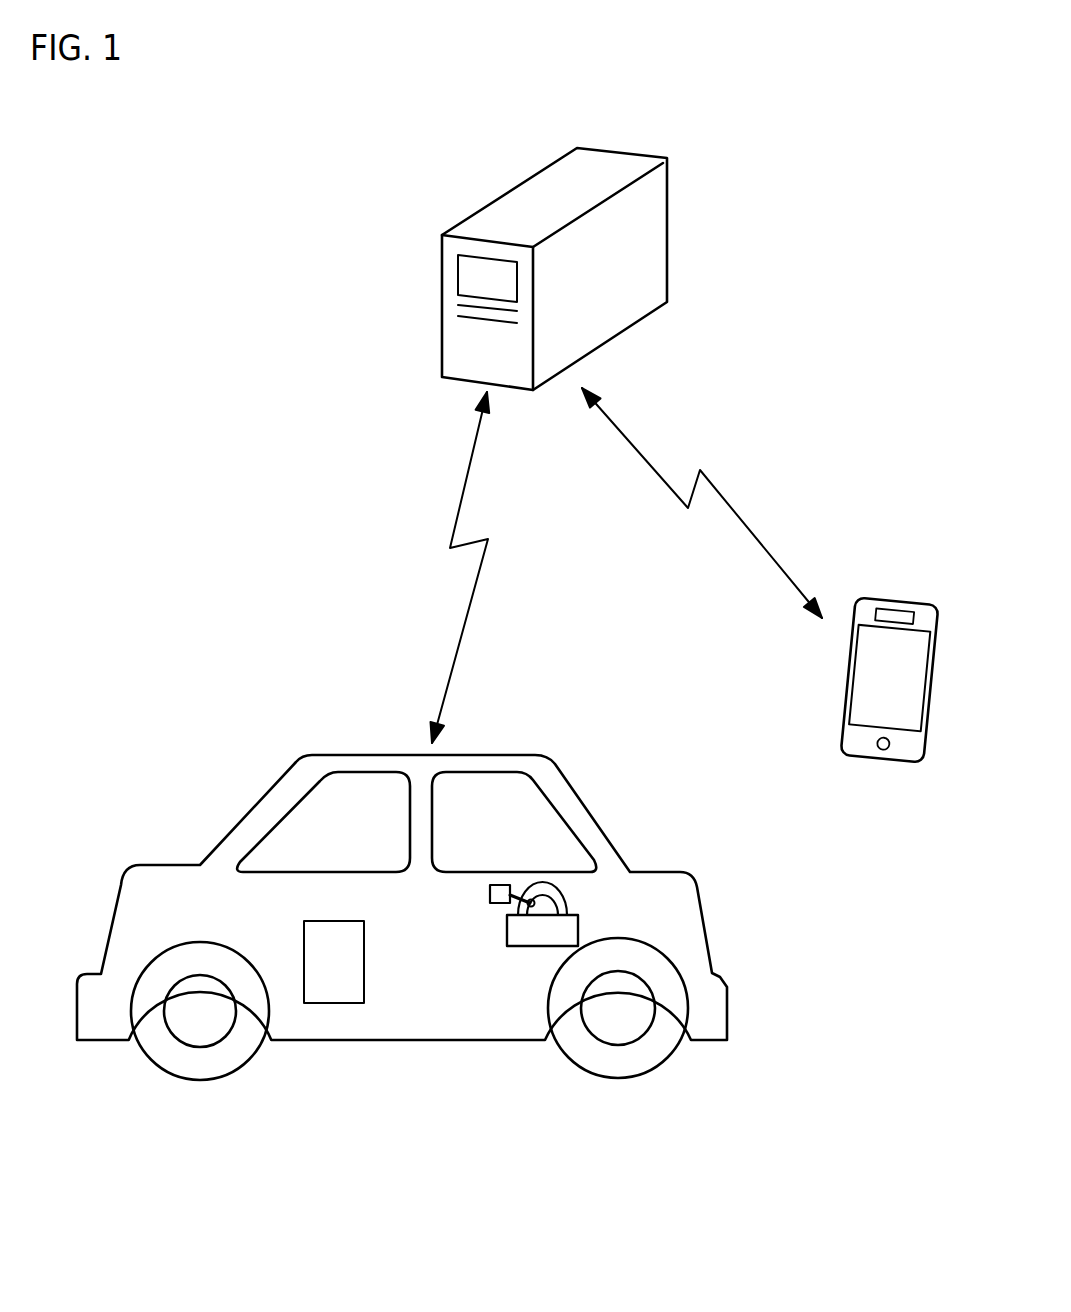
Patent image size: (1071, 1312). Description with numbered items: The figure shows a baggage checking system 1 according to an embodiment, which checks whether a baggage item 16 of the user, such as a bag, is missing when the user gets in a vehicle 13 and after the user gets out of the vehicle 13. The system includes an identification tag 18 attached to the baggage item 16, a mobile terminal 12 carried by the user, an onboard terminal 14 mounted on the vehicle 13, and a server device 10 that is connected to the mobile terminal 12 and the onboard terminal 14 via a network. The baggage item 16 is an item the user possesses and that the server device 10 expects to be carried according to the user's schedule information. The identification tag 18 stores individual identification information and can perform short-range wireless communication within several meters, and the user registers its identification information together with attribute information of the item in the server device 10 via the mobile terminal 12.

The baggage checking system 1 is at (632, 1187).
The server device 10 is at (618, 150).
The mobile terminal 12 is at (893, 598).
The vehicle 13 is at (278, 779).
The onboard terminal 14 is at (333, 970).
The baggage item 16 is at (575, 915).
The identification tag 18 is at (503, 885).